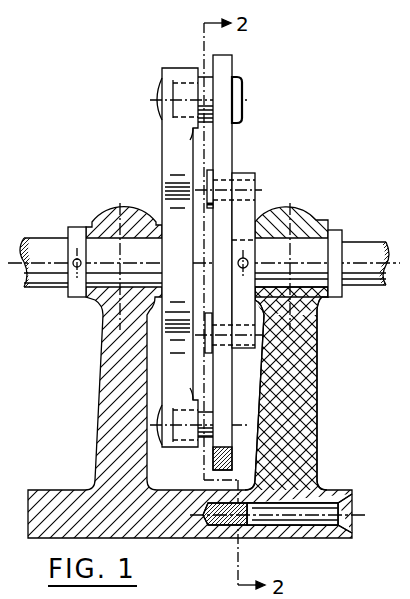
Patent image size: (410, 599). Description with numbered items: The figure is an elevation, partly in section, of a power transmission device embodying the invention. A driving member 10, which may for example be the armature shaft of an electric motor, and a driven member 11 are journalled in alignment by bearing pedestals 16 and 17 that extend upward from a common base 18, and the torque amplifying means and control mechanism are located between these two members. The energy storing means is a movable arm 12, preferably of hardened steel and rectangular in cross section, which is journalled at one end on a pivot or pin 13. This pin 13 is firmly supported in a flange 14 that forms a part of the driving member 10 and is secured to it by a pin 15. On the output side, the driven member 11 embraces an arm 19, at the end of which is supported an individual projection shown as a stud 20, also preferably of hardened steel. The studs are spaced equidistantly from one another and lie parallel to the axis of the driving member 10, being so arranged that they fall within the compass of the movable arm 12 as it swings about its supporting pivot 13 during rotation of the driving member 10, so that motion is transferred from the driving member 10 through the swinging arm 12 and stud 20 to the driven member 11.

The driving member 10 is at (347, 250).
The driven member 11 is at (46, 238).
The movable arm 12 is at (233, 70).
The pivot pin 13 is at (250, 192).
The flange 14 is at (246, 173).
The pin 15 is at (240, 268).
The bearing pedestal 16 is at (318, 219).
The bearing pedestal 17 is at (111, 210).
The base 18 is at (55, 490).
The arm 19 is at (160, 130).
The stud 20 is at (245, 121).